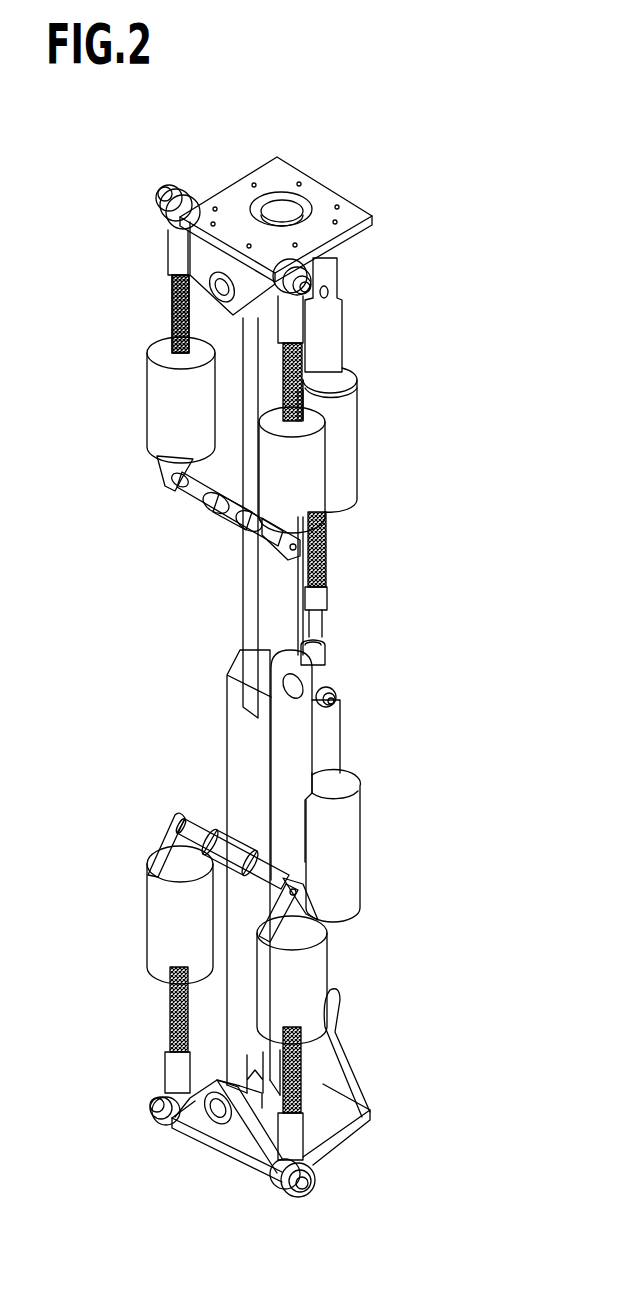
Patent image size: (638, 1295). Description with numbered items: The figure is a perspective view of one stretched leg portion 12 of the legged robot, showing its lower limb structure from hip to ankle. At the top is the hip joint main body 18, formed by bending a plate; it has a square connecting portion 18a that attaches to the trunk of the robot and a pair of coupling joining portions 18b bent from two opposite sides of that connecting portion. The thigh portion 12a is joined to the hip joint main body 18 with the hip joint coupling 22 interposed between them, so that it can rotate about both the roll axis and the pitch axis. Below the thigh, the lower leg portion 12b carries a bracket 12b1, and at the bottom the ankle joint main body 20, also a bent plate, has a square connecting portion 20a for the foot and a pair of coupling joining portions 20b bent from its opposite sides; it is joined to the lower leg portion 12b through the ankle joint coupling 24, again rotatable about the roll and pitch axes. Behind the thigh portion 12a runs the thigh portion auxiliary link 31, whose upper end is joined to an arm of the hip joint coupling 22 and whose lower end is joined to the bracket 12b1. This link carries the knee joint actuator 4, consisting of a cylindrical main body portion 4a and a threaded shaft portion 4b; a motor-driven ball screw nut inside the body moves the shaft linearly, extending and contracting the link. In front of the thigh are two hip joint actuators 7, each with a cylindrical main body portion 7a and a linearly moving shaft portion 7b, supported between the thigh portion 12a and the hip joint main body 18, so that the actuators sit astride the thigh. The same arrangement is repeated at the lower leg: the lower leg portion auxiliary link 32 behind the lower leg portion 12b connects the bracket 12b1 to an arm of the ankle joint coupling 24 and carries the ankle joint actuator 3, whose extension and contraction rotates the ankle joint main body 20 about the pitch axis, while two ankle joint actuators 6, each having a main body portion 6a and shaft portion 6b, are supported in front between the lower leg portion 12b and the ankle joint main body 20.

The leg portion 12 is at (357, 154).
The hip joint main body 18 is at (476, 222).
The connecting portion 18a is at (374, 227).
The coupling joining portions 18b is at (322, 313).
The hip joint coupling 22 is at (170, 298).
The thigh portion auxiliary link 31 is at (338, 338).
The hip joint actuators 7 is at (44, 335).
The main body portion 7a is at (160, 400).
The shaft portion 7b is at (168, 323).
The knee joint actuator 4 is at (450, 447).
The main body portion 4a is at (341, 447).
The shaft portion 4b is at (324, 541).
The thigh portion 12a is at (324, 623).
The lower leg portion auxiliary link 32 is at (324, 745).
The lower leg portion 12b is at (306, 817).
The bracket 12b1 is at (230, 827).
The ankle joint actuator 3 is at (341, 860).
The ankle joint actuators 6 is at (56, 883).
The main body portion 6a is at (160, 912).
The shaft portion 6b is at (168, 982).
The ankle joint main body 20 is at (474, 1080).
The connecting portion 20a is at (320, 1128).
The coupling joining portions 20b is at (362, 1082).
The ankle joint coupling 24 is at (212, 1120).